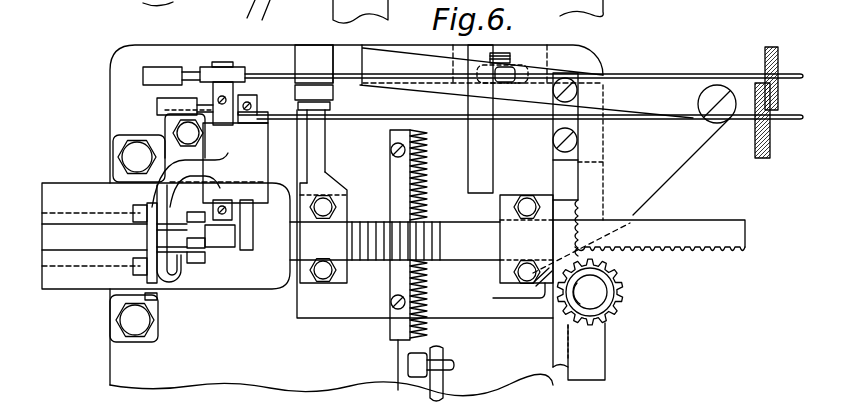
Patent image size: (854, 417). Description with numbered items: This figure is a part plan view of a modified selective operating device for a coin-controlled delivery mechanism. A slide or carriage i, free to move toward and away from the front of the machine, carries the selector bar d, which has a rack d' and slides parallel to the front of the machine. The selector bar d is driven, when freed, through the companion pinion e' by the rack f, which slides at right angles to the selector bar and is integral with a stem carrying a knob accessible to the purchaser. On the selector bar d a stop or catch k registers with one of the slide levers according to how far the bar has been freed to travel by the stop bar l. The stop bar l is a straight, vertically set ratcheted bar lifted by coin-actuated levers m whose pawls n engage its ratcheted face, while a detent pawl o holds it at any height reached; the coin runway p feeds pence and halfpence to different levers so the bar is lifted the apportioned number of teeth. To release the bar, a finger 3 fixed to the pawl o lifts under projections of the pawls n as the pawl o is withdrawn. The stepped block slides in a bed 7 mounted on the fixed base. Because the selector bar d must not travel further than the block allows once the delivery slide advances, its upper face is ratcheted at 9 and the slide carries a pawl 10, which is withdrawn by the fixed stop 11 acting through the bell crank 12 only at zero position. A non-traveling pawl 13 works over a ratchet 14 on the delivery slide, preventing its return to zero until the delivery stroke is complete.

The bed 7 is at (73, 193).
The stop bar l is at (153, 238).
The detent pawl o is at (153, 277).
The pawls n is at (172, 223).
The coin-actuated levers m is at (720, 73).
The coin runway p is at (762, 160).
The finger 3 is at (380, 60).
The fixed stop 11 is at (325, 105).
The bell crank 12 is at (310, 163).
The pawl 10 is at (320, 235).
The slide or carriage i is at (425, 214).
The stop or catch k is at (395, 241).
The ratcheted upper face 9 is at (433, 250).
The ratchet 14 is at (420, 177).
The non-traveling pawl 13 is at (423, 362).
The rack f is at (570, 183).
The selector bar d is at (649, 234).
The rack d' is at (660, 271).
The companion pinion e' is at (606, 292).